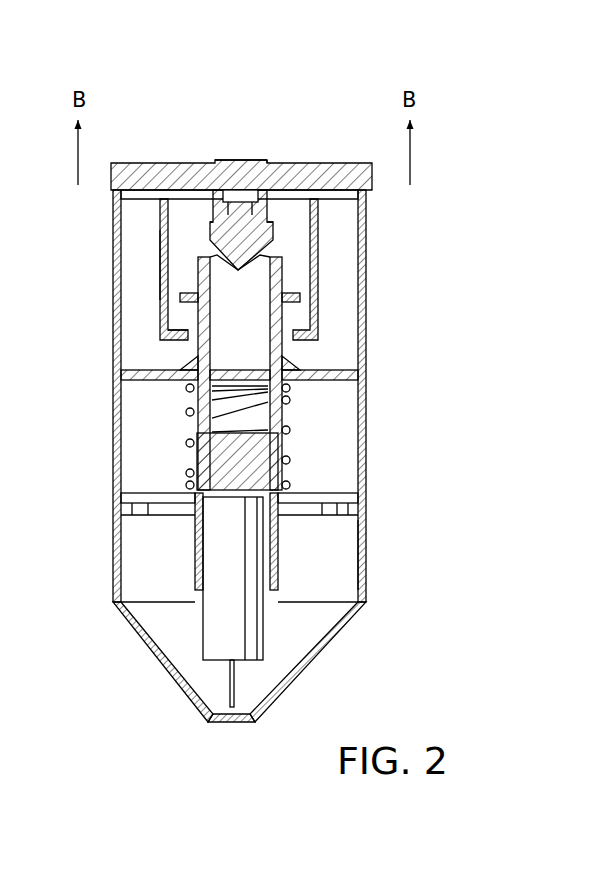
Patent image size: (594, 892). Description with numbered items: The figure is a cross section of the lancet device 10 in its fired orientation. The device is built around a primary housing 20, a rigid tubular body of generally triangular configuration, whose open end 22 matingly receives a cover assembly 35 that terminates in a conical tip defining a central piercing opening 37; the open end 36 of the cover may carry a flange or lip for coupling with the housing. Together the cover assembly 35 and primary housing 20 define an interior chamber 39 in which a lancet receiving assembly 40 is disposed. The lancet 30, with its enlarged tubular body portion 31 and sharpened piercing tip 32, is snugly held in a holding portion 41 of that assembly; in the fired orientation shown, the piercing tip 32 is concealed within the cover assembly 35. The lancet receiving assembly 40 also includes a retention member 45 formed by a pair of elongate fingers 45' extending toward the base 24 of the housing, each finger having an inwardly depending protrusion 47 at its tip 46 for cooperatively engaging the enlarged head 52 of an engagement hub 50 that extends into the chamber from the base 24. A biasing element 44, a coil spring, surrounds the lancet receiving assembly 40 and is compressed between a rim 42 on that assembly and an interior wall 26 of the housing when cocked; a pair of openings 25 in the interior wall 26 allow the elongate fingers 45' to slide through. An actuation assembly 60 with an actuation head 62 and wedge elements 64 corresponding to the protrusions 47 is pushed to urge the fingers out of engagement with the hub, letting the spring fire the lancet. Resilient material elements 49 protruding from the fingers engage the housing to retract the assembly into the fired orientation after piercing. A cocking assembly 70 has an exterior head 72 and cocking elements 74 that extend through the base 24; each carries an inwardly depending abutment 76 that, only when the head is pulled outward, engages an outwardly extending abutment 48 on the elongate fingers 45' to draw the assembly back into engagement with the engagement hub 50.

The lancet device 10 is at (444, 435).
The primary housing 20 is at (289, 396).
The open end 22 is at (365, 498).
The base 24 is at (338, 205).
The openings 25 is at (178, 385).
The interior wall 26 is at (367, 362).
The lancet 30 is at (175, 609).
The body portion 31 is at (203, 630).
The piercing tip 32 is at (229, 685).
The cover assembly 35 is at (269, 685).
The open end 36 is at (365, 567).
The piercing opening 37 is at (227, 723).
The interior chamber 39 is at (335, 487).
The lancet receiving assembly 40 is at (173, 541).
The holding portion 41 is at (197, 580).
The rim 42 is at (185, 494).
The biasing element 44 is at (297, 458).
The retention member 45 is at (277, 373).
The elongate fingers 45' is at (316, 373).
The tip 46 is at (192, 268).
The inwardly depending protrusion 47 is at (280, 372).
The outwardly extending abutment 48 is at (182, 298).
The resilient material elements 49 is at (193, 360).
The engagement hub 50 is at (239, 208).
The enlarged head 52 is at (210, 247).
The actuation assembly 60 is at (211, 154).
The actuation head 62 is at (258, 168).
The wedge elements 64 is at (210, 228).
The cocking assembly 70 is at (249, 131).
The exterior head 72 is at (300, 166).
The cocking elements 74 is at (161, 308).
The inwardly depending abutment 76 is at (180, 336).